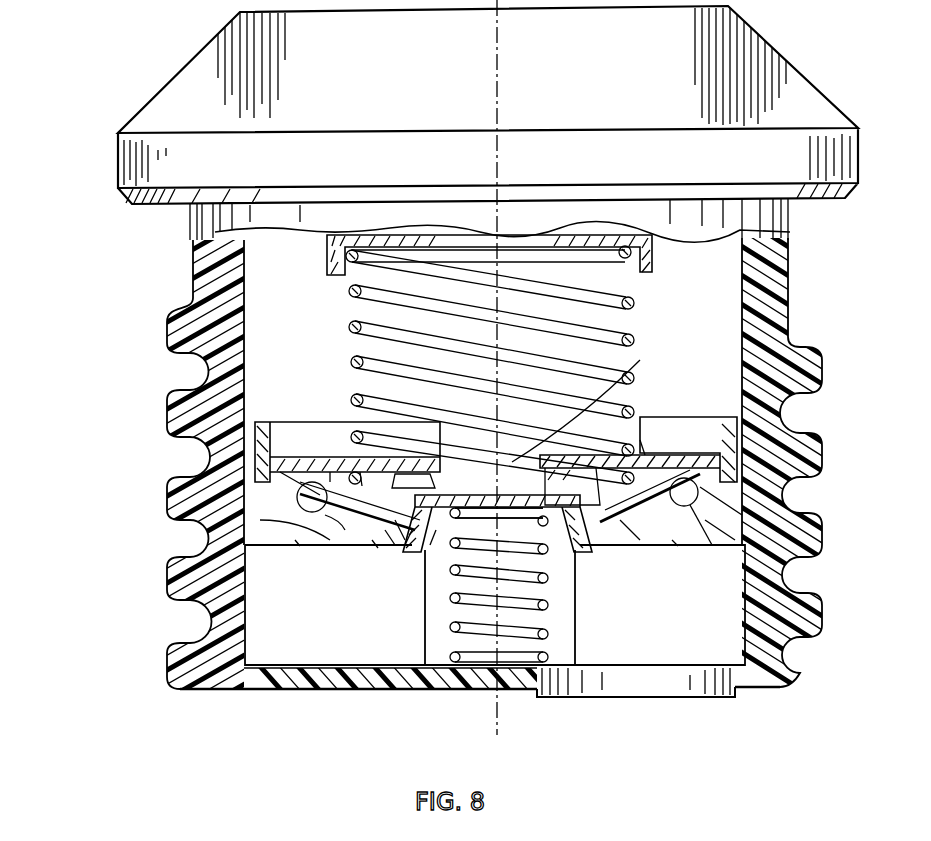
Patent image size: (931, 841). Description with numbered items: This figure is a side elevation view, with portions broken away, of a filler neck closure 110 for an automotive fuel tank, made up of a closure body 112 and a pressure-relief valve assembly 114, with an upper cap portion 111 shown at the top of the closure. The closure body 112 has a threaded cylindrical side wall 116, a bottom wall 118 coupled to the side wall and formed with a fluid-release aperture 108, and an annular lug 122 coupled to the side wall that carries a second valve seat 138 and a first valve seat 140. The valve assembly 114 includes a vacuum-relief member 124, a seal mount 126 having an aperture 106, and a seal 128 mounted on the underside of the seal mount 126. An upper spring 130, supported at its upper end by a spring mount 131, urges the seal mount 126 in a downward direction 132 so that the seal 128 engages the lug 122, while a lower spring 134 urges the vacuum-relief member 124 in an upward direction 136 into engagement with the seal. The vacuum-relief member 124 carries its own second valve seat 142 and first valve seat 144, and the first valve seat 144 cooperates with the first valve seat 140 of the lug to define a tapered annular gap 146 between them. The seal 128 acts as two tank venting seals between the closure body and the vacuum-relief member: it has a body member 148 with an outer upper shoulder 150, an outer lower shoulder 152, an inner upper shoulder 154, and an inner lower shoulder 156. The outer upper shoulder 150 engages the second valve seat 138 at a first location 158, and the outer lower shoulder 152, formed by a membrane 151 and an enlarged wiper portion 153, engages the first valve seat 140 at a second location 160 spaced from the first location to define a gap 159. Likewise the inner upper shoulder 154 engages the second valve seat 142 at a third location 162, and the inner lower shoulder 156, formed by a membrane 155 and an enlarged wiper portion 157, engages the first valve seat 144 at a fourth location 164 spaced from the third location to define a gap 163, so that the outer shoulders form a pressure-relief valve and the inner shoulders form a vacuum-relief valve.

The aperture 106 is at (512, 462).
The fluid-release aperture 108 is at (655, 700).
The filler neck closure 110 is at (58, 470).
The cap 111 is at (195, 95).
The closure body 112 is at (126, 272).
The pressure-relief valve assembly 114 is at (654, 436).
The threaded cylindrical side wall 116 is at (195, 303).
The bottom wall 118 is at (302, 688).
The annular lug 122 is at (270, 552).
The vacuum-relief member 124 is at (555, 548).
The seal mount 126 is at (322, 470).
The seal 128 is at (366, 548).
The upper spring 130 is at (590, 298).
The spring mount 131 is at (330, 248).
The downward direction 132 is at (75, 550).
The lower spring 134 is at (448, 608).
The upward direction 136 is at (25, 395).
The second valve seat 138 is at (215, 455).
The first valve seat 140 is at (323, 548).
The second valve seat 142 is at (448, 495).
The first valve seat 144 is at (404, 548).
The tapered annular gap 146 is at (376, 558).
The body member 148 is at (352, 436).
The outer upper shoulder 150 is at (715, 458).
The membrane 151 is at (300, 548).
The outer lower shoulder 152 is at (716, 548).
The enlarged wiper portion 153 is at (688, 530).
The inner upper shoulder 154 is at (562, 458).
The membrane 155 is at (388, 570).
The inner lower shoulder 156 is at (618, 548).
The enlarged wiper portion 157 is at (594, 540).
The first location 158 is at (297, 493).
The gap 159 is at (235, 530).
The second location 160 is at (326, 540).
The third location 162 is at (495, 521).
The gap 163 is at (418, 448).
The fourth location 164 is at (443, 557).